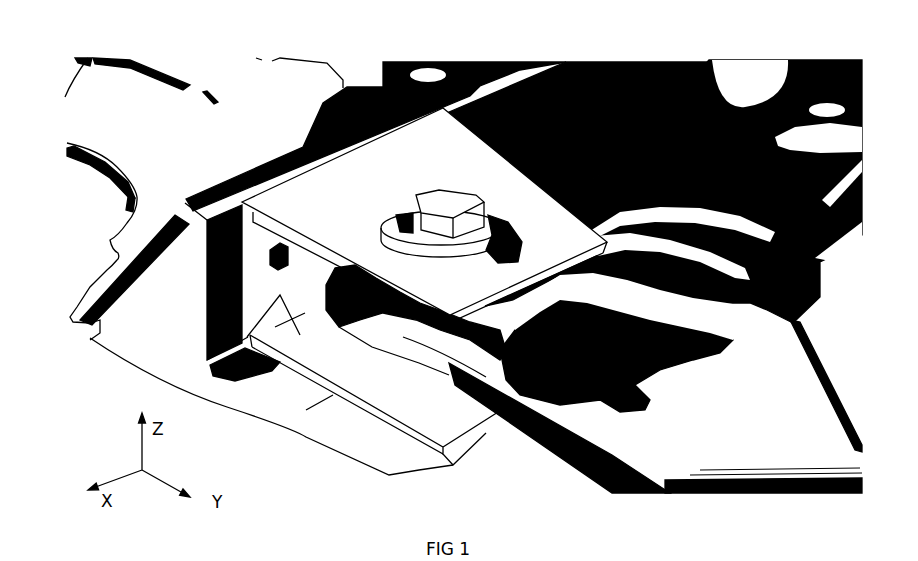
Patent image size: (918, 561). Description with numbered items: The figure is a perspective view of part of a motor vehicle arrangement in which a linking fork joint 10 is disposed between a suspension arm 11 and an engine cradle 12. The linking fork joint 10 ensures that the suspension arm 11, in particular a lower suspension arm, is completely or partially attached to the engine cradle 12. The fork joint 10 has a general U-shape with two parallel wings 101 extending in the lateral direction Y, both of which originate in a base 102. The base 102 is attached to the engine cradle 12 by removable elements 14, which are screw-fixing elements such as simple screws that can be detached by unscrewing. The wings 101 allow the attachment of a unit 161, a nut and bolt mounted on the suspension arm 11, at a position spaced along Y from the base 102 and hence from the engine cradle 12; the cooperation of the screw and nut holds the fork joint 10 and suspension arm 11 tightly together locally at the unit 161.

The linking fork joint 10 is at (250, 290).
The suspension arm 11 is at (558, 436).
The engine cradle 12 is at (150, 275).
The removable elements 14 is at (280, 257).
The wings 101 is at (399, 63).
The base 102 is at (314, 290).
The unit 161 is at (463, 207).